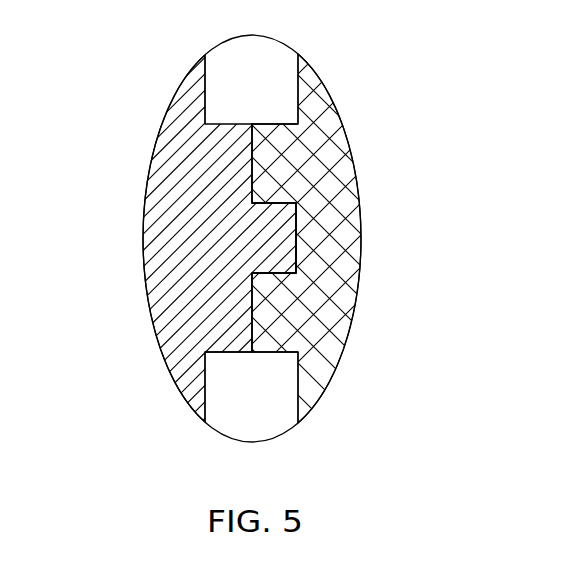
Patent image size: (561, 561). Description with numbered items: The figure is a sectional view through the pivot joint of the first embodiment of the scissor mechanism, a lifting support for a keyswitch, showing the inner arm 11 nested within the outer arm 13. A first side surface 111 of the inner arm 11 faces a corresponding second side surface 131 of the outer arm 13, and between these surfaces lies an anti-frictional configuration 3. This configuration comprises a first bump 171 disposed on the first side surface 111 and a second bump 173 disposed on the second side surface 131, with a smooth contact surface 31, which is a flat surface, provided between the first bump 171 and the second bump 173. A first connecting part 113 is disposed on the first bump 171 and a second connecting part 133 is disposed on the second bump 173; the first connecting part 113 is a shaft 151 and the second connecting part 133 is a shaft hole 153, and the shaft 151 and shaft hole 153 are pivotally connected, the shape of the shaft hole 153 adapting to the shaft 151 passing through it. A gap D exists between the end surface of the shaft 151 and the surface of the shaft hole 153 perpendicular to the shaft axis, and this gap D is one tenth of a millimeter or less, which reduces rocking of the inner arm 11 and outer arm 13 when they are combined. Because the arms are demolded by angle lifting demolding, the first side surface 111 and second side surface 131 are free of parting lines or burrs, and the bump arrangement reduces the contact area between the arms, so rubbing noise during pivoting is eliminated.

The anti-frictional configuration 3 is at (320, 372).
The inner arm 11 is at (188, 90).
The outer arm 13 is at (319, 93).
The smooth contact surface 31 is at (258, 138).
The first side surface 111 is at (207, 88).
The first connecting part 113 is at (238, 250).
The second side surface 131 is at (298, 82).
The second connecting part 133 is at (313, 223).
The shaft 151 is at (256, 225).
The shaft hole 153 is at (258, 274).
The first bump 171 is at (230, 333).
The second bump 173 is at (277, 338).
The gap D is at (300, 260).